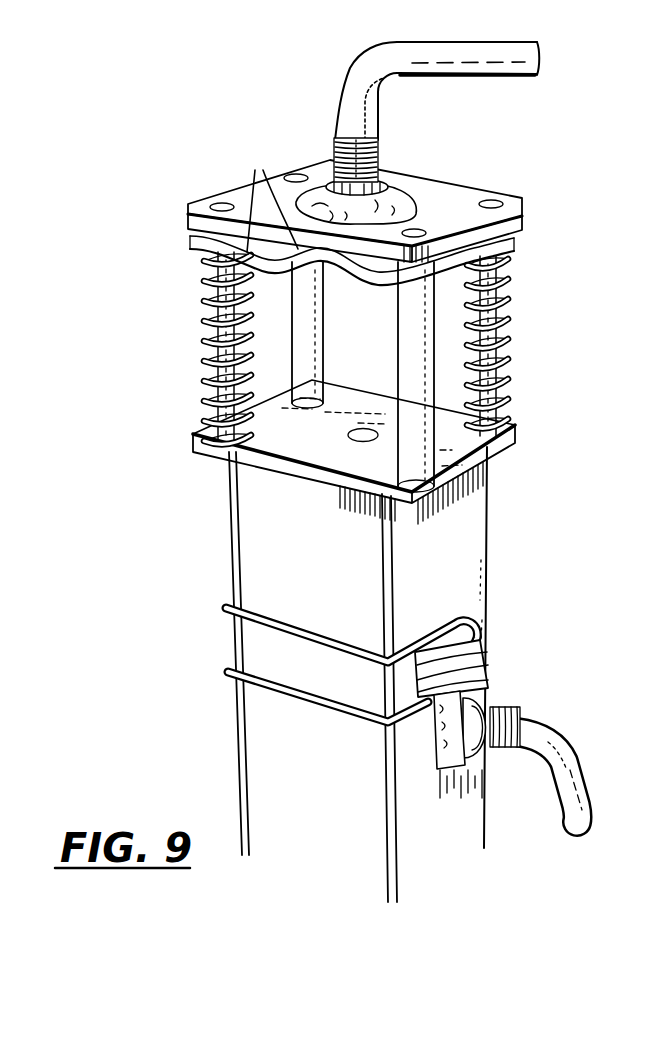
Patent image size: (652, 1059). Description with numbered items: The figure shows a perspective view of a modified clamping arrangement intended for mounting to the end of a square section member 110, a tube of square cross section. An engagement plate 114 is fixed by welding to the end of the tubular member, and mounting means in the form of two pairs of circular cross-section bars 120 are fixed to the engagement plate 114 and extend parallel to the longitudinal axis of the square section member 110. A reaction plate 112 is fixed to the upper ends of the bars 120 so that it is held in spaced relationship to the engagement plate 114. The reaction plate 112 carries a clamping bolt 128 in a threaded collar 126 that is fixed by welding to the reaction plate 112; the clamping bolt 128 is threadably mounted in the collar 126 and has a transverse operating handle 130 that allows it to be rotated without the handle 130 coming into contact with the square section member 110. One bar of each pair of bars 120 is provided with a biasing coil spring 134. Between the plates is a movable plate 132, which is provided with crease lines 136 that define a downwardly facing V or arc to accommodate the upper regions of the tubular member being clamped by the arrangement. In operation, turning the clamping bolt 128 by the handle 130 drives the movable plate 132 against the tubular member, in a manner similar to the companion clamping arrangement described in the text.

The square section member 110 is at (462, 558).
The reaction plate 112 is at (457, 200).
The engagement plate 114 is at (503, 448).
The circular cross-section bars 120 is at (403, 365).
The threaded collar 126 is at (387, 182).
The clamping bolt 128 is at (344, 104).
The operating handle 130 is at (540, 64).
The movable plate 132 is at (523, 234).
The biasing coil spring 134 is at (205, 387).
The crease lines 136 is at (261, 199).